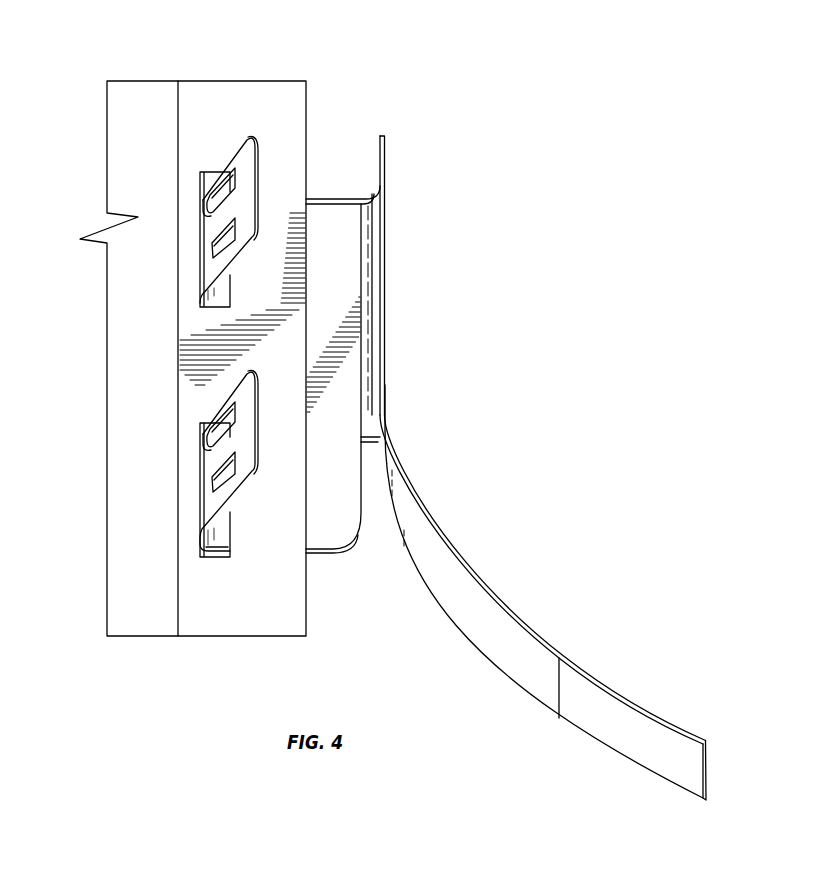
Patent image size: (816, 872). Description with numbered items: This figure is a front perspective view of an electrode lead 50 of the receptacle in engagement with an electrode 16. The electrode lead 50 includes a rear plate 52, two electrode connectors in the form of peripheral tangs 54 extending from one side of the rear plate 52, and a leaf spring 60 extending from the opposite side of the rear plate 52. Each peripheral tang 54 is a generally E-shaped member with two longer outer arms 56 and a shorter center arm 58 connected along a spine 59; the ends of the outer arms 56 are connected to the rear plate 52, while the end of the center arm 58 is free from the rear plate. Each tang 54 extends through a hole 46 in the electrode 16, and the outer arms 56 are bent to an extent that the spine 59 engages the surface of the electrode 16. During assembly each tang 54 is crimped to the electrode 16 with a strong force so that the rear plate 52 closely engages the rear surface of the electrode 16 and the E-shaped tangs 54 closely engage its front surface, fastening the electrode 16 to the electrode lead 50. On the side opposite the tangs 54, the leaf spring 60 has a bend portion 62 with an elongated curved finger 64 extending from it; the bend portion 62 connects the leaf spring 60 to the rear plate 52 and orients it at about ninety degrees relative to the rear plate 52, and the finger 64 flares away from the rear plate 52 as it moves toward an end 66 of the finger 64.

The electrode 16 is at (126, 612).
The hole 46 is at (207, 241).
The electrode lead 50 is at (429, 108).
The rear plate 52 is at (333, 520).
The peripheral tang 54 is at (222, 173).
The outer arm 56 is at (217, 415).
The center arm 58 is at (213, 460).
The spine 59 is at (300, 427).
The leaf spring 60 is at (385, 162).
The bend portion 62 is at (372, 232).
The curved finger 64 is at (480, 590).
The end of the finger 66 is at (673, 723).